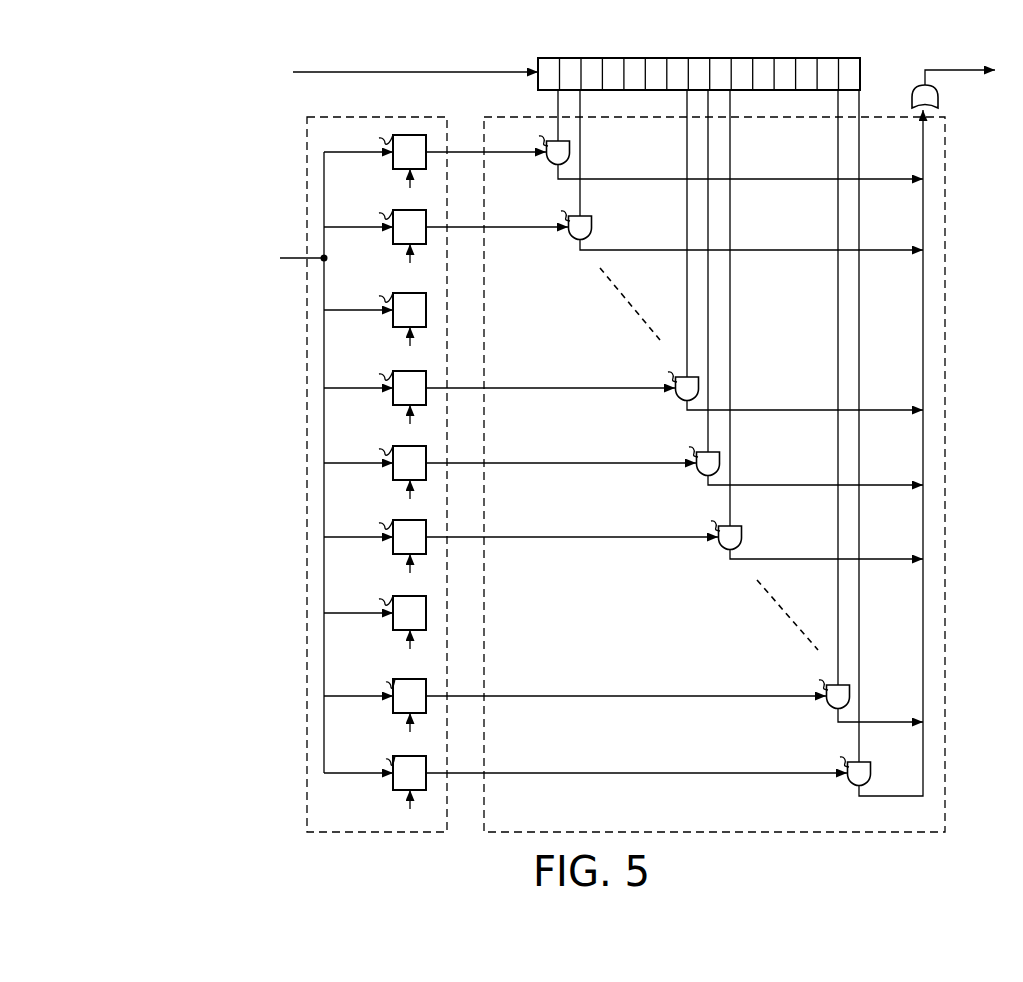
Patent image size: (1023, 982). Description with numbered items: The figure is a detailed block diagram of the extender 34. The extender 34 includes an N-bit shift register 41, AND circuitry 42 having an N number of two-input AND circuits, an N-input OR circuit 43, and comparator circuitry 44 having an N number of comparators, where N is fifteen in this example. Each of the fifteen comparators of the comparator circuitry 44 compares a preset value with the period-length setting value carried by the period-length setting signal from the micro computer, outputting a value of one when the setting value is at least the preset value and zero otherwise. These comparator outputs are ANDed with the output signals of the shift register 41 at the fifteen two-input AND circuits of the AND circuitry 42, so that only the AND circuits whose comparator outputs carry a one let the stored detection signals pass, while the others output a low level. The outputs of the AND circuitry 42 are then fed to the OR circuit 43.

The extender 34 is at (444, 58).
The N-bit shift register 41 is at (860, 54).
The AND circuitry 42 is at (946, 513).
The N-input OR circuit 43 is at (938, 98).
The comparator circuitry 44 is at (391, 112).